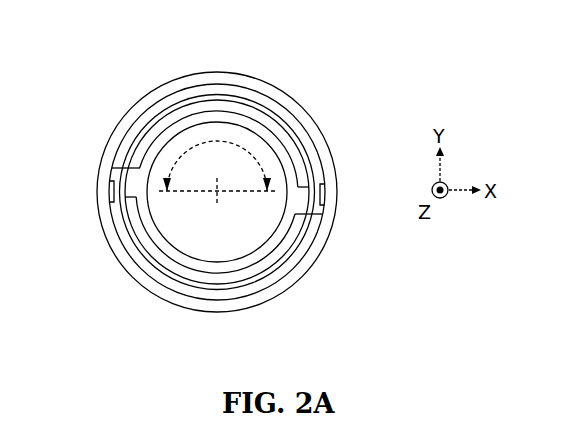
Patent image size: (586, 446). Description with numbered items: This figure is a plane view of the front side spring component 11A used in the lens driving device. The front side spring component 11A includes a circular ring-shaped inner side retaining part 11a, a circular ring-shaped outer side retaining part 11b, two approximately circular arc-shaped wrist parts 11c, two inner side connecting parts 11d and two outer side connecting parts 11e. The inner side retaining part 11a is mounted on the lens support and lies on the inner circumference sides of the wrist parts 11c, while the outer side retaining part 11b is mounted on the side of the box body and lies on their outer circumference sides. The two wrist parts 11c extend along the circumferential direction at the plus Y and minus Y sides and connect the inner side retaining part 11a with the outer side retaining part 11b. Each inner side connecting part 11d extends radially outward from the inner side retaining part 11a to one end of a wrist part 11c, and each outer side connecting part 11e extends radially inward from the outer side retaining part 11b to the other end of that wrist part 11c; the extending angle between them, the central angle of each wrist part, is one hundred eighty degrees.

The front side spring component 11A is at (143, 98).
The inner side retaining part 11a is at (201, 112).
The outer side retaining part 11b is at (287, 104).
The wrist part 11c is at (133, 131).
The inner side connecting part 11d is at (130, 171).
The outer side connecting part 11e is at (108, 200).